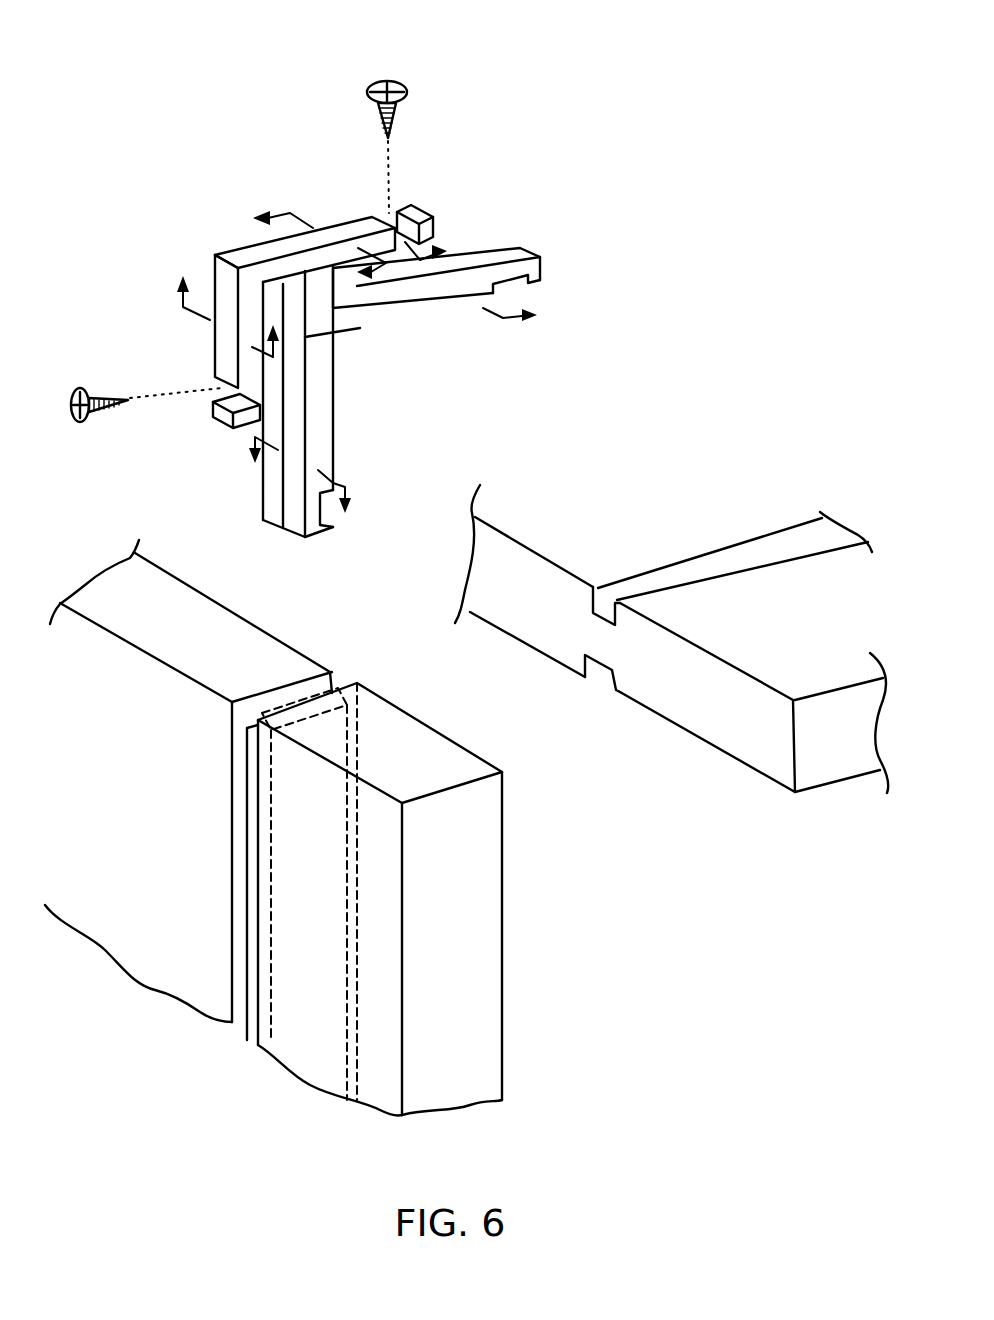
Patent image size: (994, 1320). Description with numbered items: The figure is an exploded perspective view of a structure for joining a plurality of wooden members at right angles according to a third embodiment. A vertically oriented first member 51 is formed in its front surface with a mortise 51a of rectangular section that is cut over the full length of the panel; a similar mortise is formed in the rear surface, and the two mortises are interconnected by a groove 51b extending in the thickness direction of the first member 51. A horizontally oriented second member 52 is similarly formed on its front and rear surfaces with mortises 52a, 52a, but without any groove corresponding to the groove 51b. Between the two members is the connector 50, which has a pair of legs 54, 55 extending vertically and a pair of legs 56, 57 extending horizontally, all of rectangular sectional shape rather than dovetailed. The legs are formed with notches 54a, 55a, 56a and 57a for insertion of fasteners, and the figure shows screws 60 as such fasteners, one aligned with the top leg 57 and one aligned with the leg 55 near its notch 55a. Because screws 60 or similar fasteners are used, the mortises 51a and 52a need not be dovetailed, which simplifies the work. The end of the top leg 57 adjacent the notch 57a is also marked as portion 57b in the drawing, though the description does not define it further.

The connector 50 is at (203, 103).
The first member 51 is at (486, 947).
The mortise 51a is at (247, 788).
The groove 51b is at (285, 722).
The second member 52 is at (743, 747).
The mortise 52a is at (637, 585).
The leg 54 is at (327, 358).
The notch 54a is at (332, 522).
The leg 55 is at (222, 335).
The notch 55a is at (230, 387).
The leg 56 is at (515, 255).
The notch 56a is at (514, 285).
The leg 57 is at (352, 227).
The notch 57a is at (390, 213).
The tab of top arm 57b is at (233, 255).
The screw 60 is at (378, 80).